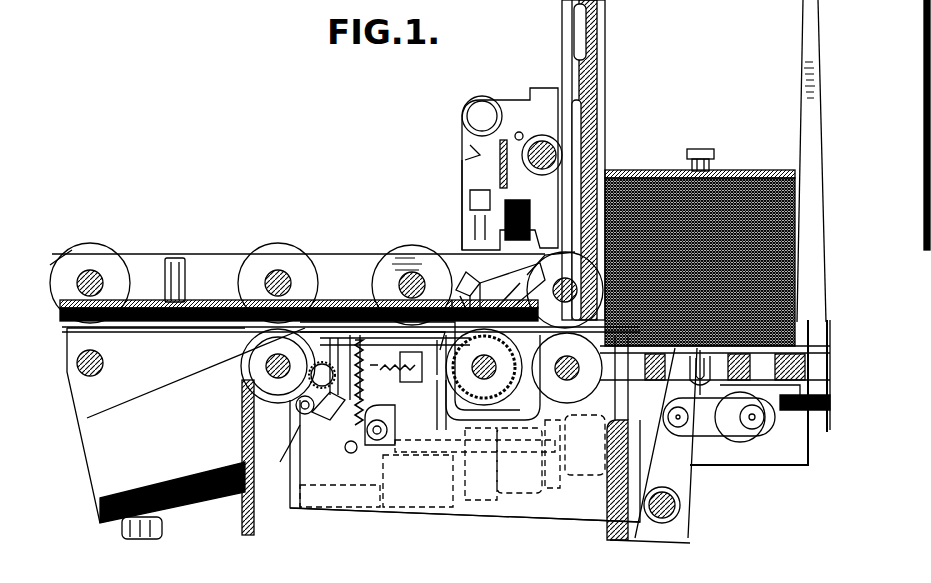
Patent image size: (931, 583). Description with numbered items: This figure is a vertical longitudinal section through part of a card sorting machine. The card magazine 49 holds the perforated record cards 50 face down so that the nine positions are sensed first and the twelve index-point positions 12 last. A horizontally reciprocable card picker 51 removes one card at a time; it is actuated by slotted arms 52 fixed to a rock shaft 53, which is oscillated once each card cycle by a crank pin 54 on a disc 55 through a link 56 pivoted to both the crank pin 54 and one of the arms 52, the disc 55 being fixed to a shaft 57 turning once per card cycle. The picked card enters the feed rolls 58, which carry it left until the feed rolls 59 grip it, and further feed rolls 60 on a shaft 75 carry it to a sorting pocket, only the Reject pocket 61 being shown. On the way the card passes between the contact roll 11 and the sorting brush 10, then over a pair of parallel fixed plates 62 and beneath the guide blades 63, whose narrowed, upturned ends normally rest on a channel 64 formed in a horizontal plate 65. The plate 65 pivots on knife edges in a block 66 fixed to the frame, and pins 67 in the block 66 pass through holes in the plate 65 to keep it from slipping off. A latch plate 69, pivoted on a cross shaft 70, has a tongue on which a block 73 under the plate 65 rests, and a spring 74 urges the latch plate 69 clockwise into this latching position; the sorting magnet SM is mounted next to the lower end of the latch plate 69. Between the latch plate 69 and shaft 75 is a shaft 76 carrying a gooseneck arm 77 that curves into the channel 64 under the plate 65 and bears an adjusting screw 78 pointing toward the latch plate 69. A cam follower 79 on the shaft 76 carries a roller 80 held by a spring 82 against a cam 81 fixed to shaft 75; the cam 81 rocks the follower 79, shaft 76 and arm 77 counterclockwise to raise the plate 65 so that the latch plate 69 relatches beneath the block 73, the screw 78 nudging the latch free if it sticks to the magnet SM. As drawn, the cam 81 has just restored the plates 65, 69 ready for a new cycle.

The sorting brush 10 is at (497, 290).
The contact roll 11 is at (484, 300).
The "12" index-point position 12 is at (214, 263).
The card magazine 49 is at (606, 123).
The perforated record cards 50 is at (737, 192).
The card picker 51 is at (811, 320).
The slotted arms 52 is at (678, 388).
The rock shaft 53 is at (682, 506).
The crank pin 54 is at (755, 440).
The disc 55 is at (742, 445).
The link 56 is at (706, 440).
The shaft 57 is at (738, 394).
The feed rolls 58 is at (565, 327).
The feed rolls 59 is at (400, 256).
The feed rolls 60 is at (128, 298).
The Reject pocket 61 is at (108, 445).
The fixed plates 62 is at (490, 377).
The guide blades 63 is at (430, 318).
The channel 64 is at (484, 367).
The horizontal plate 65 is at (335, 318).
The block 66 is at (465, 461).
The pins 67 is at (412, 368).
The latch plate 69 is at (373, 382).
The cross shaft 70 is at (367, 432).
The block 73 is at (392, 359).
The spring 74 is at (427, 385).
The shaft 75 is at (266, 366).
The shaft 76 is at (322, 417).
The gooseneck shaped arm 77 is at (356, 318).
The adjusting screw 78 is at (331, 395).
The cam follower 79 is at (297, 409).
The roller 80 is at (281, 449).
The cam 81 is at (242, 402).
The spring 82 is at (349, 453).
The sorting magnet SM is at (445, 510).